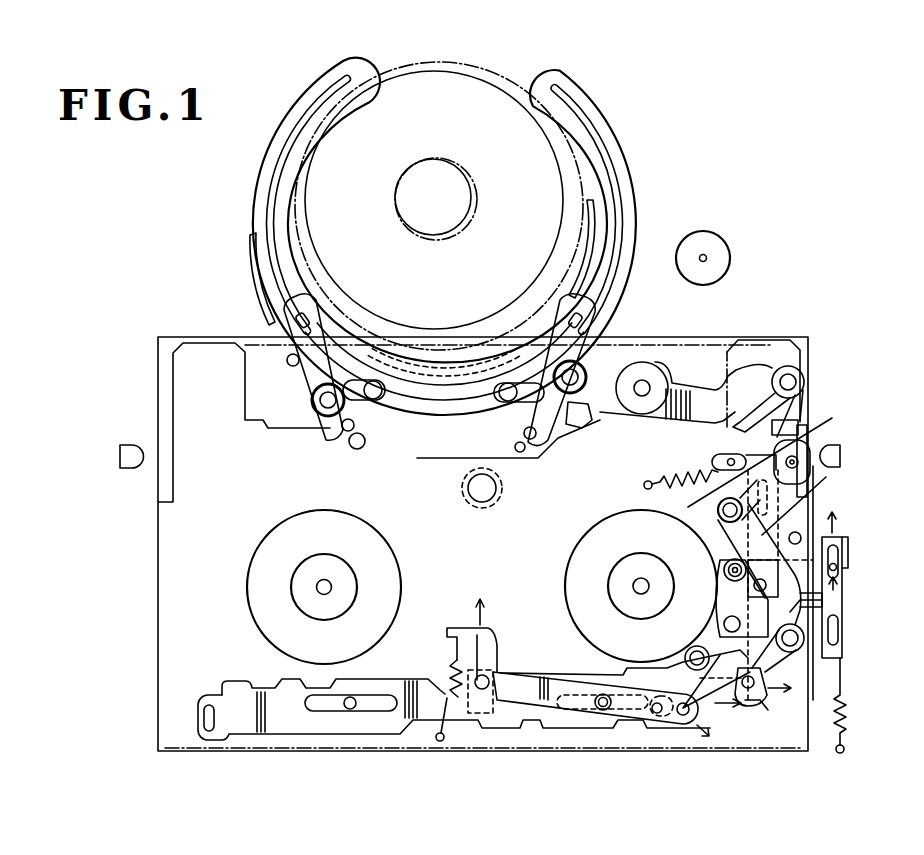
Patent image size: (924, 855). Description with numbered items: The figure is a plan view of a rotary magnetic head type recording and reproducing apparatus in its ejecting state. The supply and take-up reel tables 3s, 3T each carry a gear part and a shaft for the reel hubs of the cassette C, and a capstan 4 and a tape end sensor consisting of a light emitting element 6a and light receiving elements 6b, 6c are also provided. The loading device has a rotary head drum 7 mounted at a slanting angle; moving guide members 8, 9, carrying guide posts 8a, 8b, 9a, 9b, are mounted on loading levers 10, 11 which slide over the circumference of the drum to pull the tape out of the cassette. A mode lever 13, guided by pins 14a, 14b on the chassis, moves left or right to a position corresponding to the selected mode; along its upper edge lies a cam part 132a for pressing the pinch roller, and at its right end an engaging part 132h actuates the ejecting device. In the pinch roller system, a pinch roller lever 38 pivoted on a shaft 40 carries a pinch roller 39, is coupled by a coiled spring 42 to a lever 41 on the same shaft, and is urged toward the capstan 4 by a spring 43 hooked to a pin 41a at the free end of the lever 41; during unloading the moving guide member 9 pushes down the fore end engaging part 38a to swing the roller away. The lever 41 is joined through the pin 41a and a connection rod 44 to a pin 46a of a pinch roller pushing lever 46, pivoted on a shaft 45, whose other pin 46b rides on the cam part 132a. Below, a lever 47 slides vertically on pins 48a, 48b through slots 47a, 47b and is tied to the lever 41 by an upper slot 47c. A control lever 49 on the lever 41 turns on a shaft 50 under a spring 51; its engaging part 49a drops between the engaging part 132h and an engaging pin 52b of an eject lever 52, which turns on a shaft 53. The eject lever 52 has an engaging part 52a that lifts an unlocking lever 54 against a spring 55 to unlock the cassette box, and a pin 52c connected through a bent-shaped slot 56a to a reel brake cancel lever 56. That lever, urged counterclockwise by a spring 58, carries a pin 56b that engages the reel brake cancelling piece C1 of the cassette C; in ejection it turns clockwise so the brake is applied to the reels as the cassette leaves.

The cassette C is at (190, 336).
The rotary head drum 7 is at (490, 105).
The loading lever 10 is at (254, 201).
The loading lever 11 is at (612, 152).
The capstan 4 is at (731, 258).
The moving guide member 8 is at (370, 426).
The guide post 8a is at (373, 381).
The guide post 8b is at (312, 401).
The moving guide member 9 is at (520, 422).
The guide post 9a is at (508, 383).
The guide post 9b is at (560, 365).
The light emitting element 6a is at (468, 490).
The light receiving element 6b is at (126, 444).
The light receiving element 6c is at (841, 456).
The pinch roller 39 is at (642, 362).
The pinch roller lever 38 is at (694, 388).
The fore end engaging part 38a is at (584, 430).
The shaft 40 is at (789, 366).
The coiled spring 42 is at (800, 413).
The connection rod 44 is at (836, 478).
The lever 41 is at (802, 435).
The pin 41a is at (806, 465).
The spring 43 is at (650, 481).
The slot 47c is at (731, 458).
The lever 47 is at (793, 577).
The pin 48a is at (815, 501).
The slot 47a is at (802, 537).
The pinch roller pushing lever 46 is at (843, 549).
The unlocking lever 54 is at (840, 561).
The shaft 45 is at (840, 649).
The pin 48b is at (830, 597).
The engaging part 52a is at (840, 611).
The spring 55 is at (846, 719).
The pin 46a is at (718, 508).
The shaft 50 is at (724, 566).
The spring 51 is at (750, 565).
The eject lever 52 is at (715, 636).
The shaft 53 is at (726, 617).
The pin 46b is at (688, 653).
The slot 47b is at (806, 640).
The control lever 49 is at (768, 695).
The engaging part 49a is at (758, 706).
The engaging pin 52b is at (758, 680).
The pin 52c is at (684, 716).
The supply reel table 3s is at (258, 586).
The take-up reel table 3T is at (590, 571).
The mode lever 13 is at (300, 736).
The pin 14a is at (350, 710).
The spring 58 is at (436, 740).
The reel brake cancelling piece C1 is at (480, 714).
The pin 56b is at (485, 650).
The reel brake cancel lever 56 is at (556, 703).
The pin 14b is at (603, 710).
The bent-shaped slot 56a is at (657, 714).
The cam part 132a is at (620, 668).
The engaging part 132h is at (740, 706).